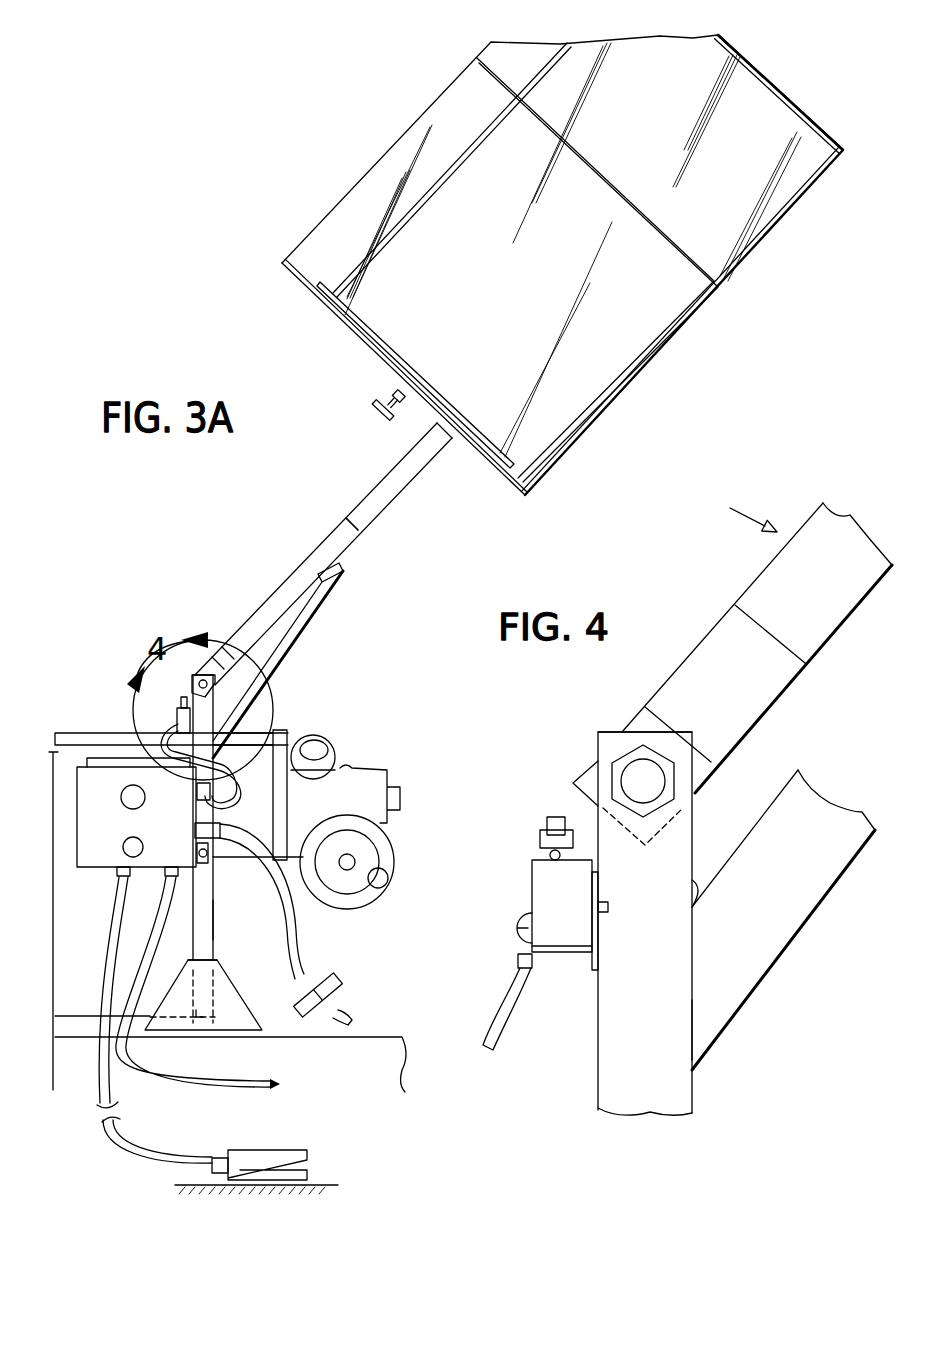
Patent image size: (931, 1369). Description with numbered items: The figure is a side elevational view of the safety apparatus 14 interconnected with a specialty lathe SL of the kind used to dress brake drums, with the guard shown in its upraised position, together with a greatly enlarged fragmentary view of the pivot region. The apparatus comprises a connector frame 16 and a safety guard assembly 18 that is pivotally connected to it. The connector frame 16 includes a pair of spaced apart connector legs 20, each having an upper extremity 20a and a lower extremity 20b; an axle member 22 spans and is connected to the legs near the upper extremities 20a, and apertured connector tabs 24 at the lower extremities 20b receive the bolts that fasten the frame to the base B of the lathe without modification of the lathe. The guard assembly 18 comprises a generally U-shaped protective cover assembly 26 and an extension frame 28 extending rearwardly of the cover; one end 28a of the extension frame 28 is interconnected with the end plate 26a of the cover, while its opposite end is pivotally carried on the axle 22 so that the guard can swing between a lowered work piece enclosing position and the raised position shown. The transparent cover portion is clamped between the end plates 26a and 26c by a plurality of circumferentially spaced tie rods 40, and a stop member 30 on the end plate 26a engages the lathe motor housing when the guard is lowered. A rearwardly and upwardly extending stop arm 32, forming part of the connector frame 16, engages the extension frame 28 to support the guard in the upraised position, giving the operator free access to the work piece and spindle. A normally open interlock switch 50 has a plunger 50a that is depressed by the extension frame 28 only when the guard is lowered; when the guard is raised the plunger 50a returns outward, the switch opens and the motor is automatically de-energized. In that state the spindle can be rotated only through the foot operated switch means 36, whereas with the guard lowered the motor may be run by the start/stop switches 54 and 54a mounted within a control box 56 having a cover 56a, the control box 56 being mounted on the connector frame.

In FIG. 3A, the safety apparatus 14 is at (256, 540).
In FIG. 3A, the connector frame 16 is at (222, 920).
In FIG. 4, the connector frame 16 is at (702, 1082).
In FIG. 3A, the safety guard assembly 18 is at (352, 500).
In FIG. 4, the safety guard assembly 18 is at (742, 576).
In FIG. 3A, the connector leg 20 is at (207, 896).
In FIG. 4, the connector leg 20 is at (613, 1070).
In FIG. 3A, the upper extremity of connector leg 20a is at (200, 712).
In FIG. 4, the upper extremity of connector leg 20a is at (605, 750).
In FIG. 3A, the lower extremity of connector leg 20b is at (205, 951).
In FIG. 3A, the axle member 22 is at (216, 682).
In FIG. 4, the axle member 22 is at (640, 785).
In FIG. 3A, the apertured connector tab 24 is at (206, 1019).
In FIG. 3A, the protective cover assembly 26 is at (438, 88).
In FIG. 3A, the end plate 26a is at (422, 160).
In FIG. 3A, the end plate 26c is at (781, 88).
In FIG. 3A, the extension frame 28 is at (352, 535).
In FIG. 4, the extension frame 28 is at (828, 532).
In FIG. 3A, the end of extension frame 28a is at (434, 440).
In FIG. 3A, the stop member 30 is at (373, 409).
In FIG. 3A, the stop arm 32 is at (325, 603).
In FIG. 4, the stop arm 32 is at (803, 912).
In FIG. 3A, the foot operated switch means 36 is at (290, 1150).
In FIG. 3A, the tie rod 40 is at (405, 215).
In FIG. 3A, the interlock switch 50 is at (175, 711).
In FIG. 4, the interlock switch 50 is at (540, 887).
In FIG. 4, the plunger 50a is at (545, 822).
In FIG. 3A, the start/stop switch 54 is at (121, 798).
In FIG. 3A, the start switch 54a is at (148, 836).
In FIG. 3A, the control box 56 is at (82, 840).
In FIG. 3A, the cover 56a is at (107, 855).
In FIG. 3A, the base B is at (288, 1037).
In FIG. 3A, the specialty lathe SL is at (360, 751).